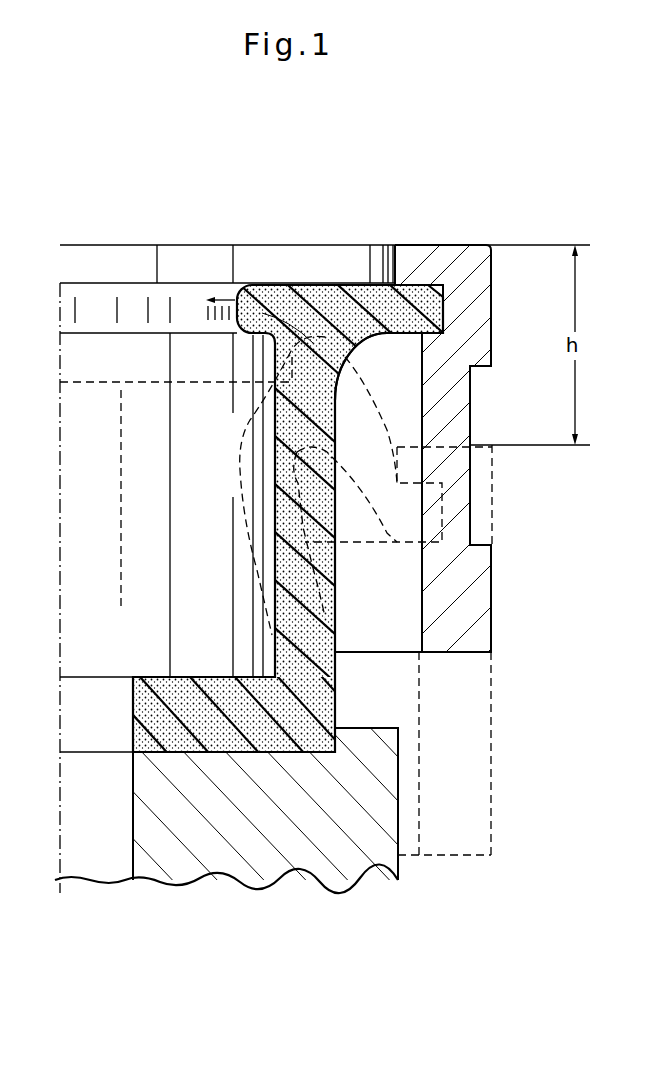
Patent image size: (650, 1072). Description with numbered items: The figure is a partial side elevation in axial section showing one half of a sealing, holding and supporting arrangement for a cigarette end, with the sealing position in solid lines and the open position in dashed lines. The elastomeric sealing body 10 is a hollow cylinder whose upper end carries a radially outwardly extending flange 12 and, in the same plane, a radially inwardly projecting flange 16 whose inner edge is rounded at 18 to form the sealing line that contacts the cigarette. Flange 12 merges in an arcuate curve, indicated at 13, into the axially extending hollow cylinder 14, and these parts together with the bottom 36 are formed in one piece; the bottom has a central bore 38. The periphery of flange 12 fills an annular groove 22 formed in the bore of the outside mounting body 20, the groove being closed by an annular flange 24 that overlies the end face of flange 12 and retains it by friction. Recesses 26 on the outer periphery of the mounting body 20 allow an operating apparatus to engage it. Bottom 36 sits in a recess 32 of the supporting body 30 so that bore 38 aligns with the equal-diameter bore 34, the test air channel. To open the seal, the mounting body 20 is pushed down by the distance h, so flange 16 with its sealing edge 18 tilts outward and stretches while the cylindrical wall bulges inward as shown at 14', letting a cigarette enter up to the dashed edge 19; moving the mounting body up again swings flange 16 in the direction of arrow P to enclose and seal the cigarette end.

The sealing body 10 is at (334, 282).
The radially outwardly extending flange 12 is at (340, 429).
The concave fillet surface 13 is at (358, 337).
The hollow cylinder 14 is at (297, 480).
The deformed cylindrical wall 14' is at (341, 485).
The radially inwardly projecting flange 16 is at (258, 292).
The rounded inner edge 18 is at (208, 318).
The edge 19 is at (193, 383).
The outside mounting body 20 is at (482, 587).
The annular groove 22 is at (443, 310).
The annular flange 24 is at (411, 262).
The recesses 26 is at (470, 410).
The supporting body 30 is at (271, 807).
The recess 32 is at (133, 743).
The bore 34 is at (120, 875).
The bottom 36 is at (218, 690).
The central bore 38 is at (100, 690).